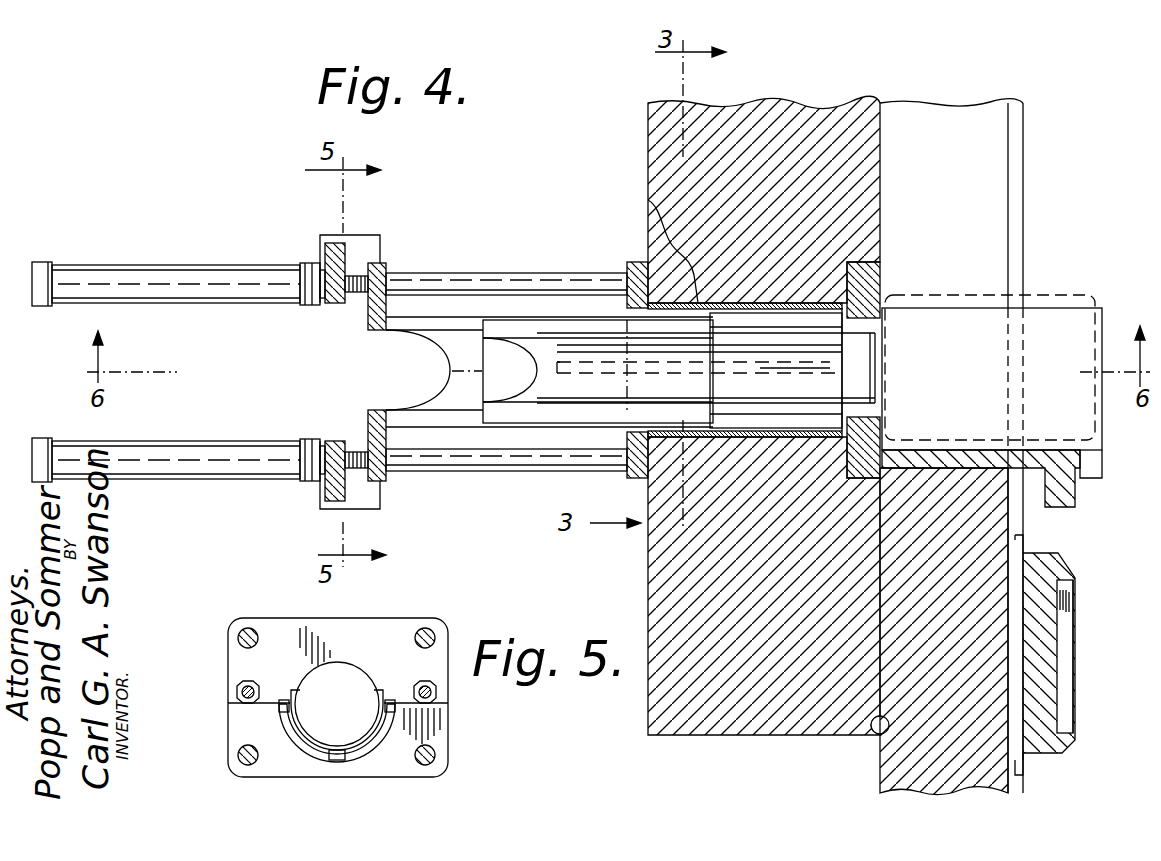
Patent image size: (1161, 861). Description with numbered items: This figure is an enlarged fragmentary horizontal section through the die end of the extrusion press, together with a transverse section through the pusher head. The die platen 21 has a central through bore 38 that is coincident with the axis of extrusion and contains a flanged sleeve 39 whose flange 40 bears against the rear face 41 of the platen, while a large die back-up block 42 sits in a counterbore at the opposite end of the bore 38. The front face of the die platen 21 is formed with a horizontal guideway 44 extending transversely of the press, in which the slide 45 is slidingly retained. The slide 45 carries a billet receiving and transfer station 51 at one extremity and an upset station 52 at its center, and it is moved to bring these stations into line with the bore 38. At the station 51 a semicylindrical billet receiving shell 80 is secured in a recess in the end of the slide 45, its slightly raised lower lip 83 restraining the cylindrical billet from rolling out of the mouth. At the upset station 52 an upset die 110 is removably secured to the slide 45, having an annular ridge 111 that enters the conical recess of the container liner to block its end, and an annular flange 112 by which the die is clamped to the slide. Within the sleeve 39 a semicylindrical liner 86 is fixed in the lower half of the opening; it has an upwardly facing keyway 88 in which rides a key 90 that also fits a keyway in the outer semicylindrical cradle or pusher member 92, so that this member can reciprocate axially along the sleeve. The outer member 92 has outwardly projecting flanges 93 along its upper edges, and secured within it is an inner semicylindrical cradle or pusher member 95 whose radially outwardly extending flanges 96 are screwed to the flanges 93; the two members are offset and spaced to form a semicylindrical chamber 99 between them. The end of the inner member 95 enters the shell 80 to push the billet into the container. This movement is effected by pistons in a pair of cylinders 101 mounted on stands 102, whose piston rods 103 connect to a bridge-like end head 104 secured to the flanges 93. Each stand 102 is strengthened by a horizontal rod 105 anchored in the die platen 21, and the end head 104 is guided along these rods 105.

In FIG. 4, the die platen 21 is at (818, 103).
In FIG. 4, the central through bore 38 is at (754, 309).
In FIG. 4, the flanged sleeve 39 is at (648, 204).
In FIG. 4, the flange 40 is at (636, 262).
In FIG. 5, the flange 40 is at (228, 725).
In FIG. 4, the rear face 41 is at (648, 578).
In FIG. 4, the die back-up block 42 is at (870, 276).
In FIG. 4, the horizontal guideway 44 is at (878, 744).
In FIG. 4, the slide 45 is at (884, 780).
In FIG. 4, the billet receiving and transfer station 51 is at (1054, 328).
In FIG. 4, the upset station 52 is at (1074, 570).
In FIG. 4, the semicylindrical billet receiving shell 80 is at (1000, 450).
In FIG. 4, the lower lip 83 is at (987, 301).
In FIG. 5, the semicylindrical liner 86 is at (366, 762).
In FIG. 4, the keyway 88 is at (768, 374).
In FIG. 4, the key 90 is at (650, 374).
In FIG. 5, the key 90 is at (340, 760).
In FIG. 4, the outer semicylindrical cradle or pusher member 92 is at (440, 379).
In FIG. 5, the outer semicylindrical cradle or pusher member 92 is at (308, 746).
In FIG. 4, the outwardly projecting flanges 93 is at (440, 320).
In FIG. 4, the inner semicylindrical cradle or pusher member 95 is at (868, 374).
In FIG. 5, the inner semicylindrical cradle or pusher member 95 is at (344, 742).
In FIG. 4, the radially outwardly extending flanges 96 is at (574, 326).
In FIG. 4, the semicylindrical chamber 99 is at (600, 372).
In FIG. 4, the cylinders 101 is at (178, 270).
In FIG. 4, the stands 102 is at (324, 246).
In FIG. 4, the piston rods 103 is at (335, 306).
In FIG. 5, the piston rods 103 is at (238, 690).
In FIG. 4, the end head 104 is at (386, 266).
In FIG. 5, the end head 104 is at (400, 604).
In FIG. 4, the horizontal rod 105 is at (487, 274).
In FIG. 5, the horizontal rod 105 is at (250, 628).
In FIG. 4, the upset die 110 is at (1040, 684).
In FIG. 4, the annular ridge 111 is at (1076, 734).
In FIG. 4, the annular flange 112 is at (1030, 760).